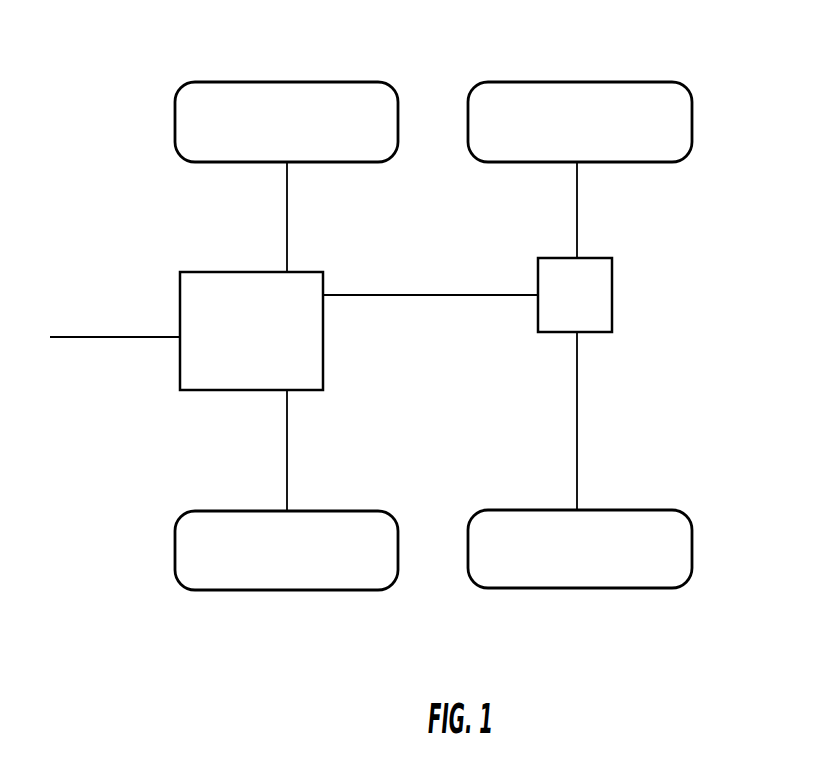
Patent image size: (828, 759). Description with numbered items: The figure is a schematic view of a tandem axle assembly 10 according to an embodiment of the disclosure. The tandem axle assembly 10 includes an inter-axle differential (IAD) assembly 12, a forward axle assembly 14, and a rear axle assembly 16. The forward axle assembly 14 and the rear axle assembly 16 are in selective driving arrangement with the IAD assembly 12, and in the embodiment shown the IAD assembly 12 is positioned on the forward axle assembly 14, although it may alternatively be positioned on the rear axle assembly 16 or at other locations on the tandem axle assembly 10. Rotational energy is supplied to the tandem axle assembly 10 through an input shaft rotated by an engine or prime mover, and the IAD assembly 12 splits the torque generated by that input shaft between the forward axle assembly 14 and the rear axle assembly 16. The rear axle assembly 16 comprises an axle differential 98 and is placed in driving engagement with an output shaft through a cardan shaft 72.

The tandem axle assembly 10 is at (440, 53).
The inter-axle differential assembly 12 is at (202, 270).
The forward axle assembly 14 is at (277, 616).
The rear axle assembly 16 is at (595, 614).
The cardan shaft 72 is at (435, 294).
The axle differential 98 is at (605, 295).